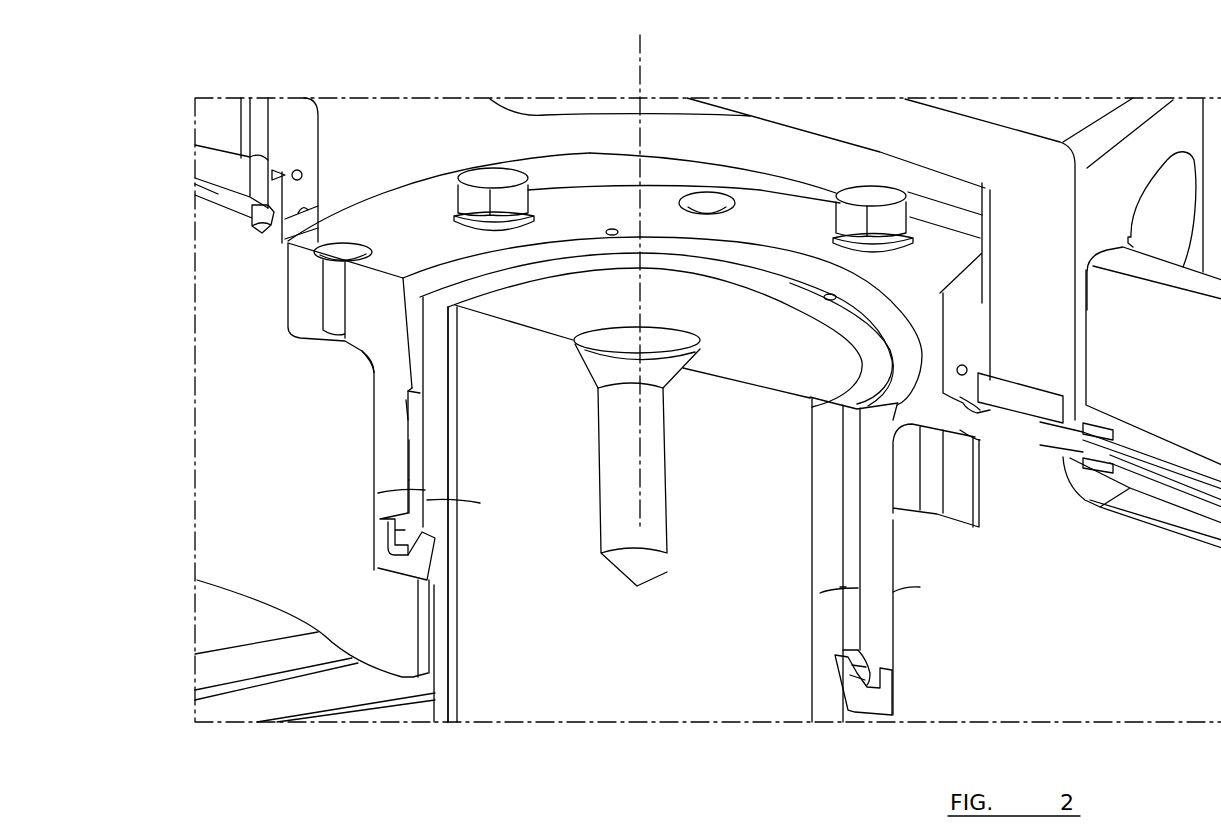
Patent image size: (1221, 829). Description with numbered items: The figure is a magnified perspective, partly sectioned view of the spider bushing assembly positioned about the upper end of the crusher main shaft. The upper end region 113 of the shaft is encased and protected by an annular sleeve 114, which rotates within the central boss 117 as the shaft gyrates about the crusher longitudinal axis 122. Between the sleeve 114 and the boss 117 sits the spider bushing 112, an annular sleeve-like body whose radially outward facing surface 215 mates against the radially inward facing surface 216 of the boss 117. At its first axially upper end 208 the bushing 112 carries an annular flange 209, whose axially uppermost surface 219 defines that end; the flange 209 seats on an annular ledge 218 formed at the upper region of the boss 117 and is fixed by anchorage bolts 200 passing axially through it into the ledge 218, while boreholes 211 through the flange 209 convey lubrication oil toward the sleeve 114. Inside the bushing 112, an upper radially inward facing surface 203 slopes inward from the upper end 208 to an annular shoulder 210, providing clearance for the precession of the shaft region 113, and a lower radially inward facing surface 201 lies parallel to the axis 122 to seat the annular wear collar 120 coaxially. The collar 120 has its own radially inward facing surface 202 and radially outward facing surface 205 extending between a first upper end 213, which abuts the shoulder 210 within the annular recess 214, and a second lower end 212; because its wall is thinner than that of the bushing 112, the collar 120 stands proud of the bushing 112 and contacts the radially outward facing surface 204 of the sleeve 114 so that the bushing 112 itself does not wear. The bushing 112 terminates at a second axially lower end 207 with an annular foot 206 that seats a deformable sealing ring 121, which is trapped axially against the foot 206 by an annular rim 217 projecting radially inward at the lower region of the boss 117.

The spider bushing 112 is at (390, 445).
The upper end region of shaft 113 is at (597, 680).
The annular sleeve 114 is at (448, 677).
The central boss 117 is at (1055, 672).
The annular wear collar 120 is at (417, 482).
The sealing ring 121 is at (397, 567).
The longitudinal axis 122 is at (642, 80).
The anchorage bolts 200 is at (493, 172).
The radially inward facing surface (lower) 201 is at (413, 463).
The radially inward facing surface of collar 202 is at (423, 420).
The radially inward facing surface (upper) 203 is at (417, 347).
The radially outward facing surface of sleeve 204 is at (407, 367).
The radially outward facing surface of collar 205 is at (407, 408).
The annular foot 206 is at (389, 542).
The second axially lower end 207 is at (905, 668).
The first axially upper end 208 is at (895, 289).
The annular flange 209 is at (378, 290).
The annular shoulder 210 is at (840, 533).
The boreholes 211 is at (612, 229).
The second lower end of collar 212 is at (847, 643).
The first upper end of collar 213 is at (420, 390).
The annular recess 214 is at (853, 587).
The radially outward facing surface of bushing 215 is at (895, 590).
The radially inward facing surface of boss 216 is at (423, 498).
The annular rim 217 is at (387, 643).
The annular ledge 218 is at (292, 346).
The axially uppermost surface 219 is at (788, 218).